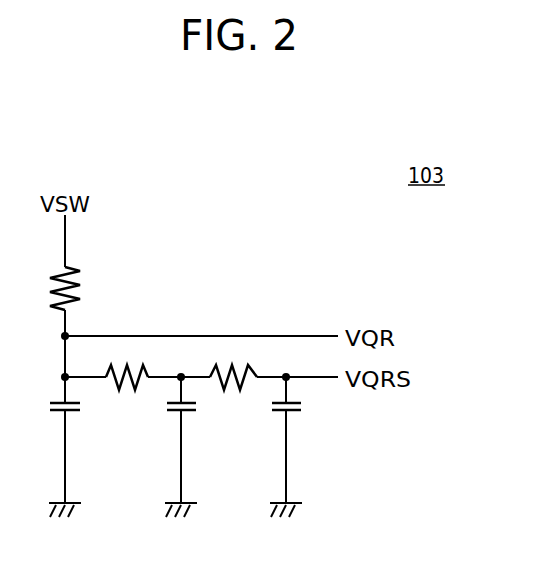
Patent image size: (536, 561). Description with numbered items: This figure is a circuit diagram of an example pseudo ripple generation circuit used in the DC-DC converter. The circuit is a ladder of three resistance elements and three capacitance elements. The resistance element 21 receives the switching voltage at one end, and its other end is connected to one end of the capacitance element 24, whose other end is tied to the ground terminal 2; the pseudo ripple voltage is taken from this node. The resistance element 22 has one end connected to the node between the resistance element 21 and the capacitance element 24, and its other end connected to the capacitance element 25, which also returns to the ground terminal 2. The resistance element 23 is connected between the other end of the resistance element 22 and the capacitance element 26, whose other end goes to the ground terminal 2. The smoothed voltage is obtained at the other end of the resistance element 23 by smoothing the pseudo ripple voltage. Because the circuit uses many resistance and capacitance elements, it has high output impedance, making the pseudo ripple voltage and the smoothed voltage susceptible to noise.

The resistance element 21 is at (53, 280).
The resistance element 22 is at (122, 392).
The resistance element 23 is at (228, 392).
The capacitance element 24 is at (54, 413).
The capacitance element 25 is at (173, 413).
The capacitance element 26 is at (293, 413).
The ground terminal 2 is at (75, 502).